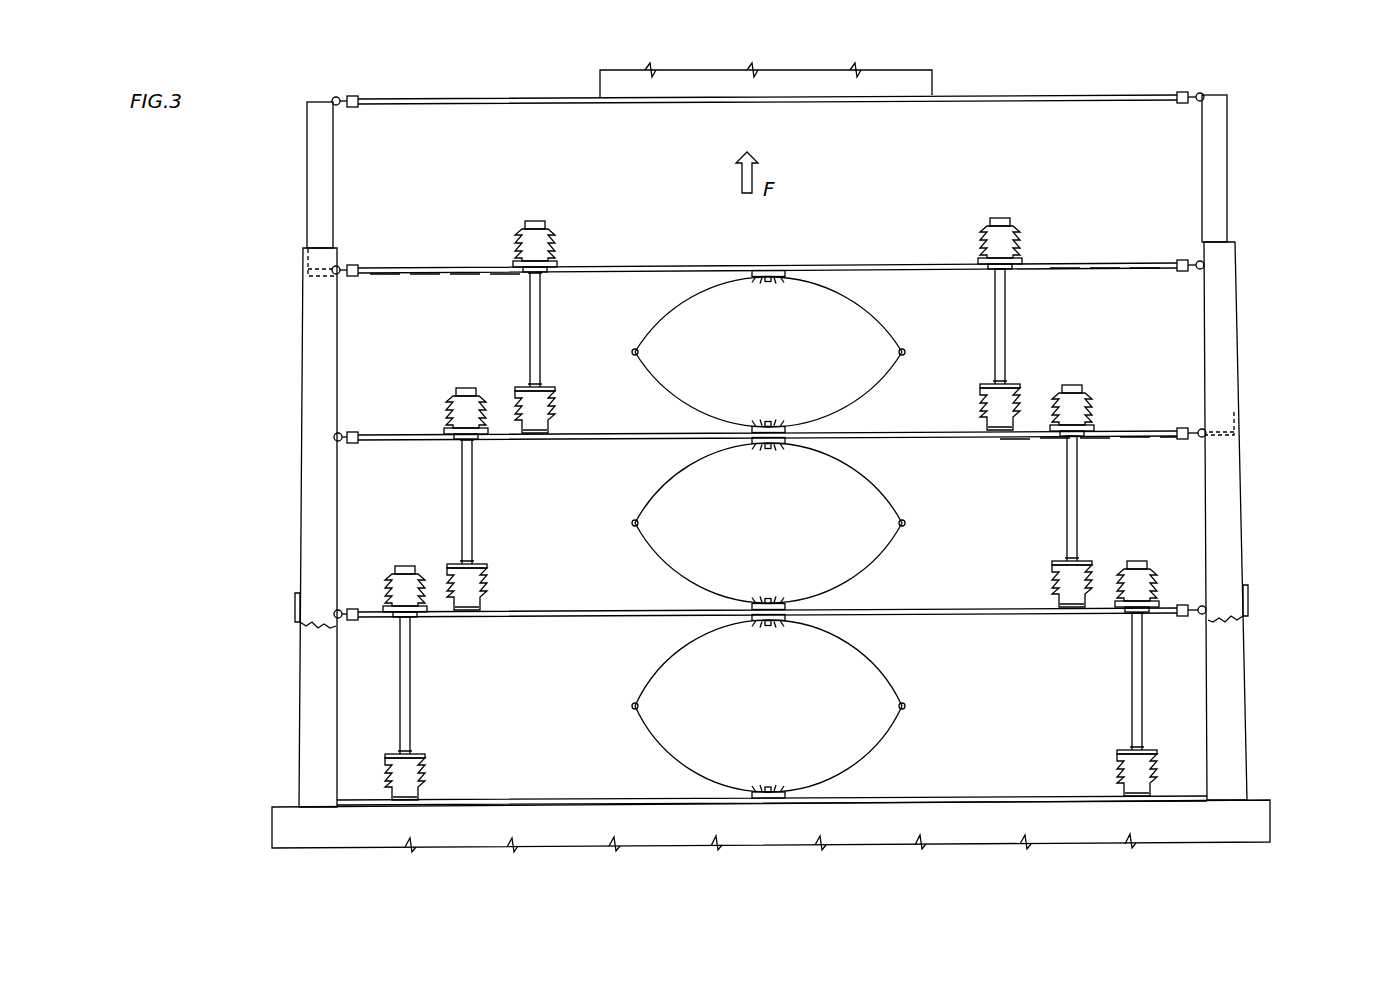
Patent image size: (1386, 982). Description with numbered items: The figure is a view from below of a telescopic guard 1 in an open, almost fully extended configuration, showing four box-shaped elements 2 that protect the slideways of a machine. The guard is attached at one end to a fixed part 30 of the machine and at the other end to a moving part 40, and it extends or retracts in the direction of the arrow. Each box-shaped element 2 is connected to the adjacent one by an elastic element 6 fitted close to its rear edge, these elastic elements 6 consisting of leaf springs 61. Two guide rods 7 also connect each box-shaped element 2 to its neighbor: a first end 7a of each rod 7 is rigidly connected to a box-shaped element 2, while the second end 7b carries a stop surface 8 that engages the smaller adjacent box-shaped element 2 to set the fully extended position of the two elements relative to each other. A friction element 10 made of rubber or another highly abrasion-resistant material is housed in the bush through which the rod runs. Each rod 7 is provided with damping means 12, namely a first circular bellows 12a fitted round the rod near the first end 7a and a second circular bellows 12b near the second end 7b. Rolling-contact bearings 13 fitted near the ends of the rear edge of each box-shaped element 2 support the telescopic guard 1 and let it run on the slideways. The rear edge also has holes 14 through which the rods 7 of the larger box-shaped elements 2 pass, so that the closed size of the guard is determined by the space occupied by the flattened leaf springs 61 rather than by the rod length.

The telescopic guard 1 is at (1252, 113).
The box-shaped element 2 is at (304, 172).
The elastic element 6 is at (668, 300).
The leaf spring 61 is at (848, 468).
The guide rod 7 is at (458, 496).
The first end 7a is at (458, 553).
The second end 7b is at (458, 450).
The stop surface 8 is at (443, 398).
The friction element 10 is at (440, 434).
The damping means 12 is at (510, 248).
The first circular bellows 12a is at (1027, 383).
The second circular bellows 12b is at (1022, 232).
The rolling-contact bearing 13 is at (1190, 262).
The hole 14 is at (460, 268).
The fixed part 30 is at (305, 827).
The moving part 40 is at (740, 86).